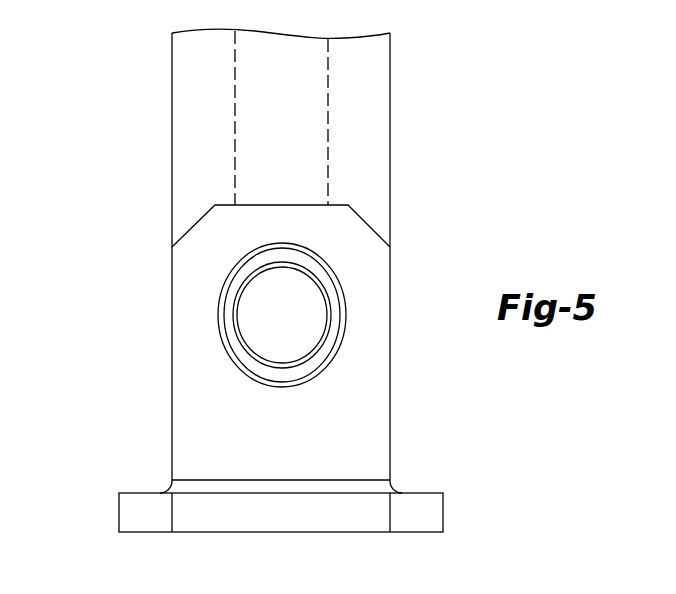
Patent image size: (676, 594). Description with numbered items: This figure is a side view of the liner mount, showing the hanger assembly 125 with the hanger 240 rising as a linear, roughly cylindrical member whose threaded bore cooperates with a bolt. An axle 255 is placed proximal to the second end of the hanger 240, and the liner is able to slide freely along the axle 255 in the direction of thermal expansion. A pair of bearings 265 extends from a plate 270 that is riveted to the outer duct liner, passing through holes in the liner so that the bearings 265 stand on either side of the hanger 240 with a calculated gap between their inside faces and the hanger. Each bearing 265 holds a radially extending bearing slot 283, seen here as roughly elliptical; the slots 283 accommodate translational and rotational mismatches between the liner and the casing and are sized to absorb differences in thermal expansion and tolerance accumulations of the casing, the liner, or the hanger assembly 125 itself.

The hanger assembly 125 is at (103, 208).
The hanger 240 is at (172, 94).
The axle 255 is at (298, 328).
The bearings 265 is at (198, 388).
The plate 270 is at (435, 513).
The bearing slot 283 is at (234, 262).